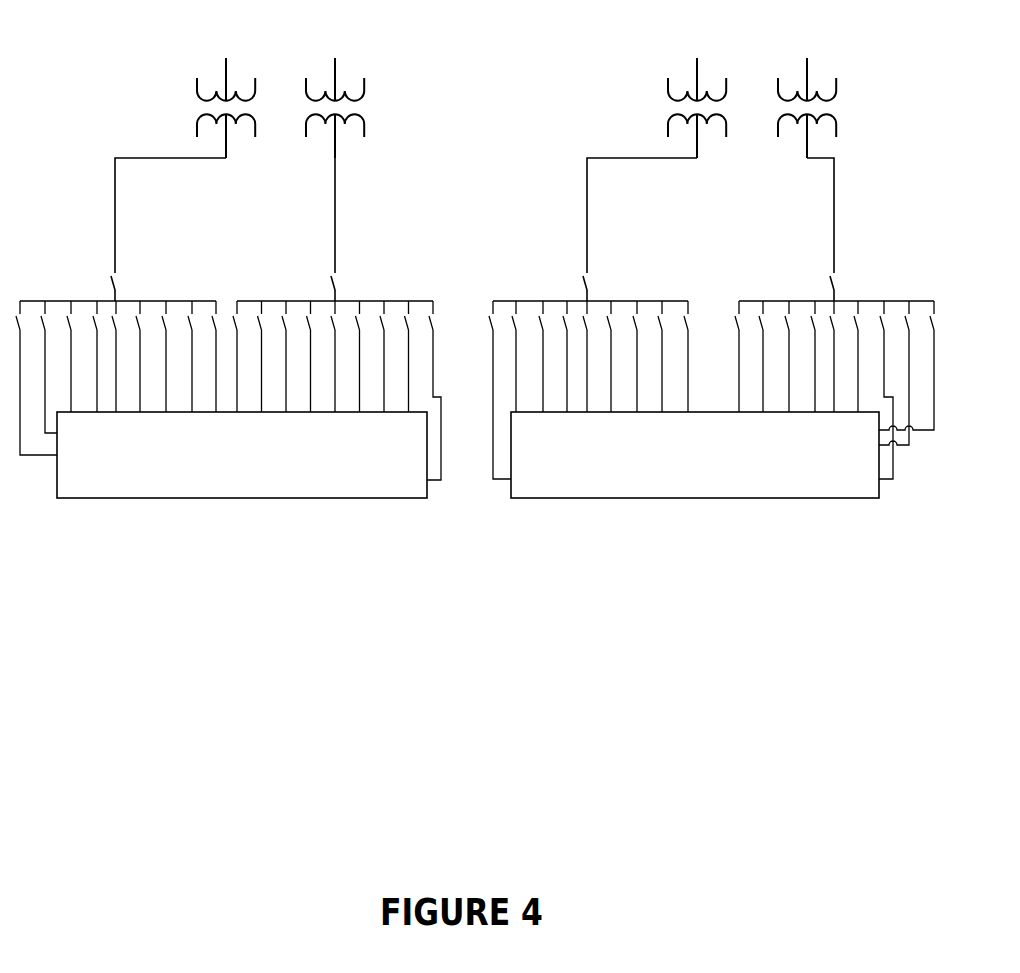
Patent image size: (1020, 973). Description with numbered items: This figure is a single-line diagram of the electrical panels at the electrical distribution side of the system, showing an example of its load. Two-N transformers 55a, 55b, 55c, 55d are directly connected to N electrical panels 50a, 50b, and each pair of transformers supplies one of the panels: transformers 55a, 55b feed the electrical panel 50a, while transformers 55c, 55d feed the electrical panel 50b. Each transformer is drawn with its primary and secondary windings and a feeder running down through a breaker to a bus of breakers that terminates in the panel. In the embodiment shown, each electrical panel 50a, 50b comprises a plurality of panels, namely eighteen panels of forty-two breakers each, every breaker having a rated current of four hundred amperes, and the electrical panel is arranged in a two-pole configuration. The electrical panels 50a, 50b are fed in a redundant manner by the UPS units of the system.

The transformer 55a is at (187, 95).
The transformer 55b is at (368, 113).
The transformer 55c is at (667, 105).
The transformer 55d is at (842, 106).
The electrical panel 50a is at (264, 505).
The electrical panel 50b is at (660, 505).